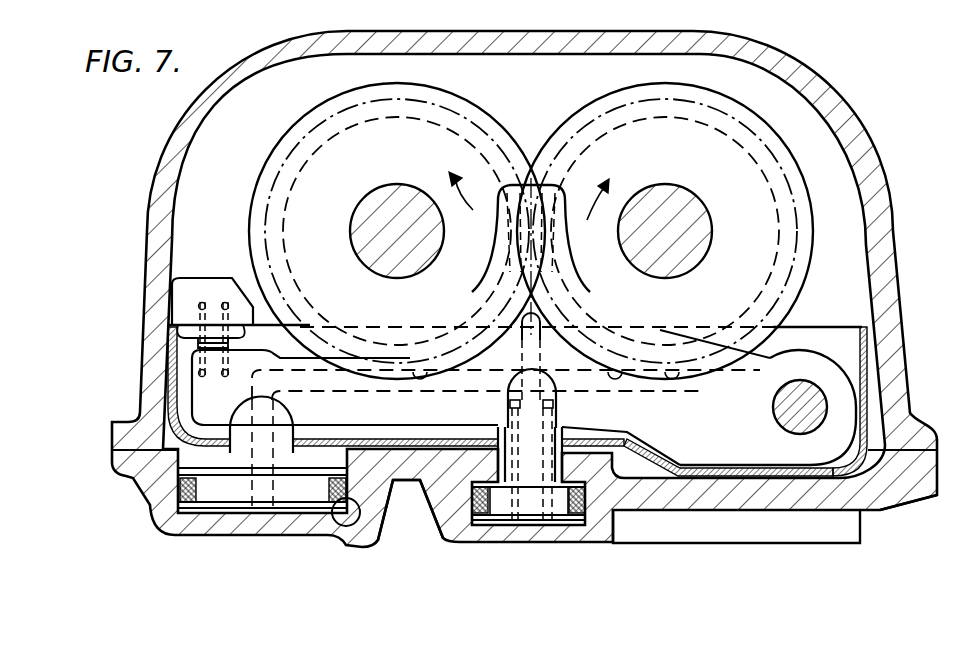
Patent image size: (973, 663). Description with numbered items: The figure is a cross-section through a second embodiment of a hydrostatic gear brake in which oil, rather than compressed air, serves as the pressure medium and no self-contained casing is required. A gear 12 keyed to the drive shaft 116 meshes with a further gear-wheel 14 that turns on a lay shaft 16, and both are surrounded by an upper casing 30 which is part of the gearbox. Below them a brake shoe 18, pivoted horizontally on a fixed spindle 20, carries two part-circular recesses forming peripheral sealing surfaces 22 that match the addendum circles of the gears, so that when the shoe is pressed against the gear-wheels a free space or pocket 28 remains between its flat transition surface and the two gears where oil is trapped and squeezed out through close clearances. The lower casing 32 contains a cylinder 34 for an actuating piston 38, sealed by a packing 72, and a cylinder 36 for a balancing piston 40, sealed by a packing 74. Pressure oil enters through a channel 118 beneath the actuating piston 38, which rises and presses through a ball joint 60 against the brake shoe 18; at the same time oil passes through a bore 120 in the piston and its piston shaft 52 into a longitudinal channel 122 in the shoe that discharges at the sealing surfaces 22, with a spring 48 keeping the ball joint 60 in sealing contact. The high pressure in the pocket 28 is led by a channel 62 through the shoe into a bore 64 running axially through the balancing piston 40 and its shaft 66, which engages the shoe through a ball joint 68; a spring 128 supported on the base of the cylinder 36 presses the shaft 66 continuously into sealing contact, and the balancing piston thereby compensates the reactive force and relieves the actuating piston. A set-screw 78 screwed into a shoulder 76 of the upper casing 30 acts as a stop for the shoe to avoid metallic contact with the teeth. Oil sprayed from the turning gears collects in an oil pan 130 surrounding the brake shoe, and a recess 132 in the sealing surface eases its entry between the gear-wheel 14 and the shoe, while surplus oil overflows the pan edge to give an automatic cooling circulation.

The gear 12 is at (465, 130).
The gear-wheel 14 is at (718, 127).
The lay shaft 16 is at (670, 220).
The brake shoe 18 is at (722, 447).
The fixed spindle 20 is at (793, 403).
The part-circular recesses / peripheral sealing surfaces 22 is at (442, 368).
The free space / pocket 28 is at (540, 310).
The upper casing 30 is at (890, 233).
The lower casing 32 is at (887, 493).
The cylinder 34 is at (373, 528).
The cylinder 36 is at (567, 430).
The actuating piston 38 is at (293, 492).
The balancing piston 40 is at (560, 503).
The spring 48 is at (190, 345).
The piston shaft 52 is at (243, 463).
The ball joint 60 is at (190, 387).
The channel 62 is at (545, 332).
The bore 64 is at (537, 503).
The shaft 66 is at (498, 520).
The ball joint 68 is at (508, 392).
The packing 72 is at (180, 492).
The packing 74 is at (590, 520).
The shoulder 76 is at (198, 293).
The set-screw 78 is at (172, 330).
The drive shaft 116 is at (410, 215).
The channel 118 is at (348, 528).
The bore 120 is at (263, 492).
The longitudinal channel 122 is at (313, 380).
The spring 128 is at (512, 405).
The oil pan 130 is at (870, 373).
The recess 132 is at (790, 358).